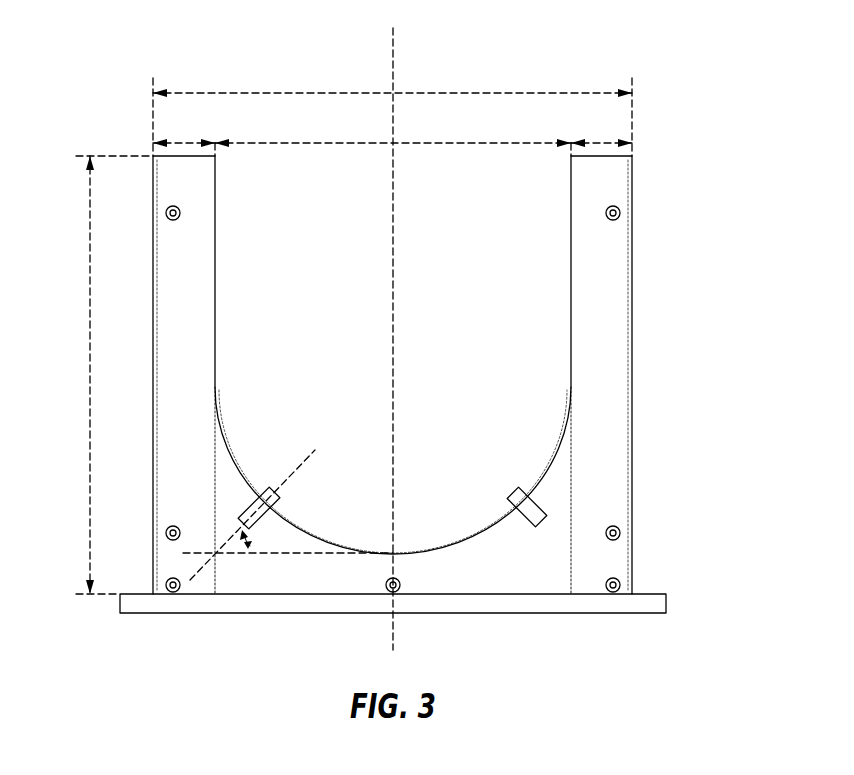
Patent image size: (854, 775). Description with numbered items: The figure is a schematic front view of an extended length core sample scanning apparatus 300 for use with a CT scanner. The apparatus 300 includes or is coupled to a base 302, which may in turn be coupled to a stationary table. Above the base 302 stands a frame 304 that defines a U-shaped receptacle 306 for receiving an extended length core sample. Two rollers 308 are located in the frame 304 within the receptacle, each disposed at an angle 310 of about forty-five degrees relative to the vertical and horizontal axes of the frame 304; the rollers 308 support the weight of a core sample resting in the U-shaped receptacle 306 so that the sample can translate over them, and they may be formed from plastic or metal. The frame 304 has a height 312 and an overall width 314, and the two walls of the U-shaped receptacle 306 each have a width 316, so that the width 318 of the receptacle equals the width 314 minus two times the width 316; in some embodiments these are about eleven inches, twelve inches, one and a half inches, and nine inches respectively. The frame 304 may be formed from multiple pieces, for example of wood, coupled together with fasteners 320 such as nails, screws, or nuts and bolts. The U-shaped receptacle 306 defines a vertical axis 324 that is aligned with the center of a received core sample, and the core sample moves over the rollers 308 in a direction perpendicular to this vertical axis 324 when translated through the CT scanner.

The extended length core sample scanning apparatus 300 is at (632, 301).
The base 302 is at (666, 605).
The frame 304 is at (617, 423).
The U-shaped receptacle 306 is at (491, 330).
The rollers 308 is at (272, 497).
The angle 310 is at (250, 540).
The height 312 is at (90, 375).
The width 314 is at (442, 92).
The width 316 is at (182, 142).
The width 318 is at (277, 142).
The fasteners 320 is at (181, 212).
The vertical axis 324 is at (393, 82).